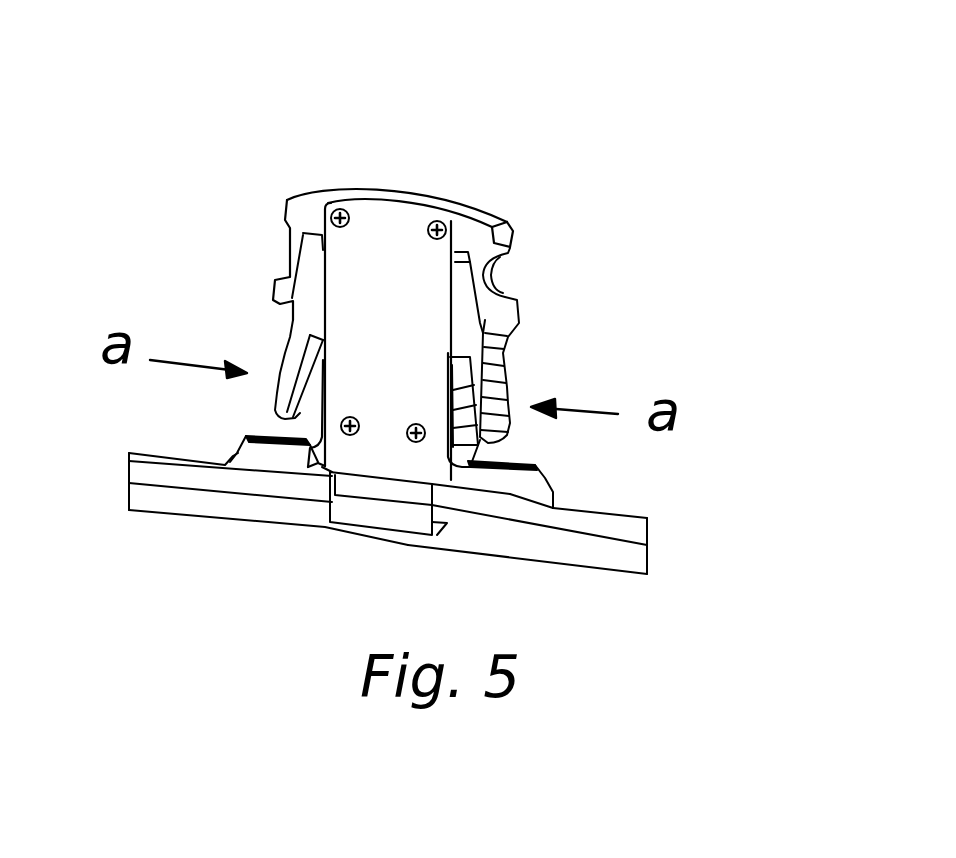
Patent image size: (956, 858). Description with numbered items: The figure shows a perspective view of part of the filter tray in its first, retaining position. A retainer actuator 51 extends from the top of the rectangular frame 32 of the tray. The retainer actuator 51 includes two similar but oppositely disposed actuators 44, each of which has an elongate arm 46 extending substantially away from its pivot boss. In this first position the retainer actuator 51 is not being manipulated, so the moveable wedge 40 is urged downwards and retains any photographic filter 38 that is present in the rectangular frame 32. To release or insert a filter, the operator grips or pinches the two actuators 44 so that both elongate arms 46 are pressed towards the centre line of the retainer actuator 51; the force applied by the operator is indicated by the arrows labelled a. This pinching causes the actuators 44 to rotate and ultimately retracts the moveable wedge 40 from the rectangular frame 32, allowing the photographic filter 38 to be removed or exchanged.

The retainer actuator 51 is at (384, 299).
The actuator 44 is at (467, 329).
The elongate arm 46 is at (284, 402).
The photographic filter 38 is at (247, 518).
The moveable wedge 40 is at (350, 510).
The rectangular frame 32 is at (627, 528).